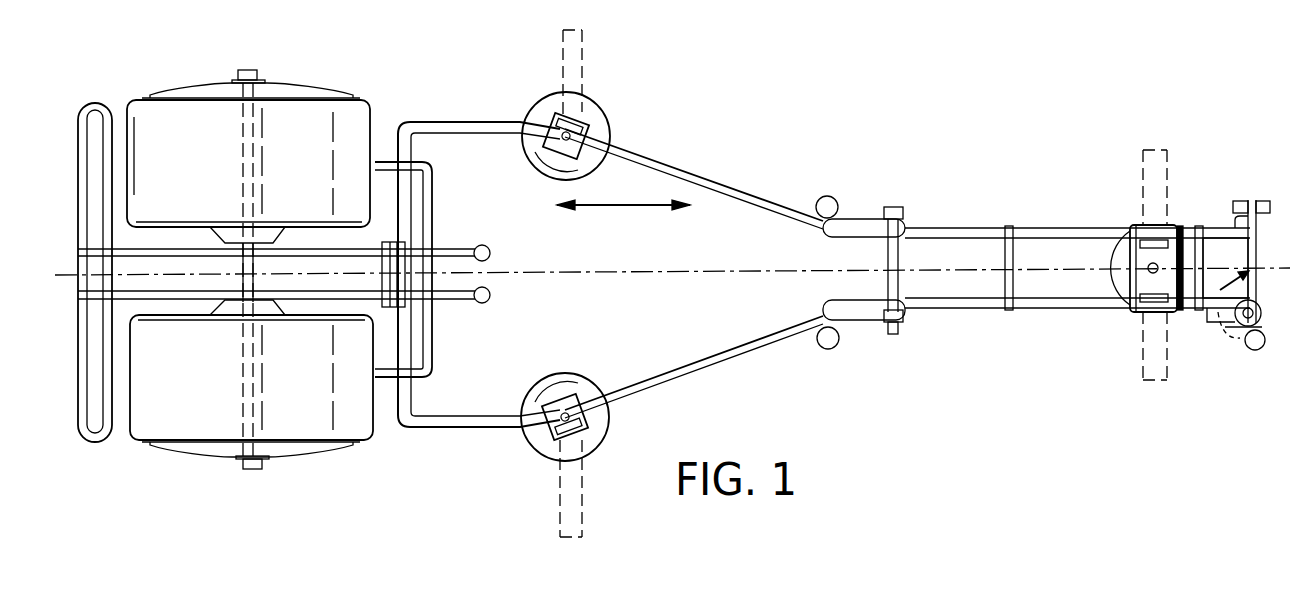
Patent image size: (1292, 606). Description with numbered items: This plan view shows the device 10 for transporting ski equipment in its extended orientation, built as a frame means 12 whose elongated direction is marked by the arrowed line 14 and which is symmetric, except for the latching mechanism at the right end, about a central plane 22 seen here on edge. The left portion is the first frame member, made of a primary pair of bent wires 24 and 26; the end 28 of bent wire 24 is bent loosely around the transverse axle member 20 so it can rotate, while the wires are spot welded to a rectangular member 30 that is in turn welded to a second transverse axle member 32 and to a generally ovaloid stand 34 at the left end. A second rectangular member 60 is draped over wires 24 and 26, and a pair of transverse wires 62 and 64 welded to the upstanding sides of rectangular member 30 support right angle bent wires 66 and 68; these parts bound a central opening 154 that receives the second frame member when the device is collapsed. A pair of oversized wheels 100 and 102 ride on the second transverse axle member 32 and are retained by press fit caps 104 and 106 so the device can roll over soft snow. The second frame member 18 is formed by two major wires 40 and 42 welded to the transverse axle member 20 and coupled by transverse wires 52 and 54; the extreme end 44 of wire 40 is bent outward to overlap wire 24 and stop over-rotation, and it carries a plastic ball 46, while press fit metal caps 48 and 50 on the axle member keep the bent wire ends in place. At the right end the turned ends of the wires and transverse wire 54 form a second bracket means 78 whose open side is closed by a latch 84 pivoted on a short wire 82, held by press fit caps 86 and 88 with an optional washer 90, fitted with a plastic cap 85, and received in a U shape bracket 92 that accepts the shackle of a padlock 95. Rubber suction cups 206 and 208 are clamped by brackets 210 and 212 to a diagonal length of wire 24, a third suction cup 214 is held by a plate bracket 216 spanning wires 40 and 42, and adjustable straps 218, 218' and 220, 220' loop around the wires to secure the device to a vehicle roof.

The device 10 is at (772, 110).
The frame means 12 is at (855, 198).
The elongated direction 14 is at (603, 205).
The second frame member 18 is at (988, 225).
The transverse axle member 20 is at (900, 284).
The central plane 22 is at (598, 271).
The bent wire 24 is at (707, 357).
The bent wire 26 is at (683, 177).
The end of bent wire 28 is at (907, 318).
The rectangular member 30 is at (413, 232).
The second transverse axle member 32 is at (246, 278).
The stand 34 is at (97, 103).
The wire 40 is at (967, 309).
The wire 42 is at (947, 229).
The extreme end of bent wire 44 is at (822, 316).
The plastic ball 46 is at (836, 348).
The press fit metal cap 48 is at (898, 335).
The press fit metal cap 50 is at (872, 185).
The wire 52 is at (1013, 246).
The wire 54 is at (1192, 226).
The second rectangular member 60 is at (434, 372).
The wire 62 is at (390, 242).
The wire 64 is at (410, 307).
The right angle bent wire 66 is at (450, 300).
The right angle bent wire 68 is at (468, 245).
The second bracket means 78 is at (1215, 316).
The short wire 82 is at (1242, 200).
The latch 84 is at (1226, 268).
The press fit plastic cap 85 is at (1257, 351).
The press fit cap 86 is at (1236, 218).
The press fit cap 88 is at (1265, 201).
The washer 90 is at (1242, 201).
The U shape bracket 92 is at (1262, 302).
The padlock 95 is at (1232, 340).
The wheel 100 is at (362, 420).
The wheel 102 is at (356, 112).
The press fit cap 104 is at (256, 469).
The press fit cap 106 is at (252, 70).
The central opening 154 is at (567, 341).
The rubber suction cup 206 is at (607, 421).
The rubber suction cup 208 is at (598, 114).
The clamping bracket 210 is at (552, 423).
The clamping bracket 212 is at (581, 136).
The rubber suction cup 214 is at (1110, 277).
The bracket 216 is at (1132, 240).
The adjustable strap 218 is at (541, 488).
The adjustable strap 218' is at (536, 74).
The adjustable strap 220 is at (1102, 346).
The adjustable strap 220' is at (1119, 187).